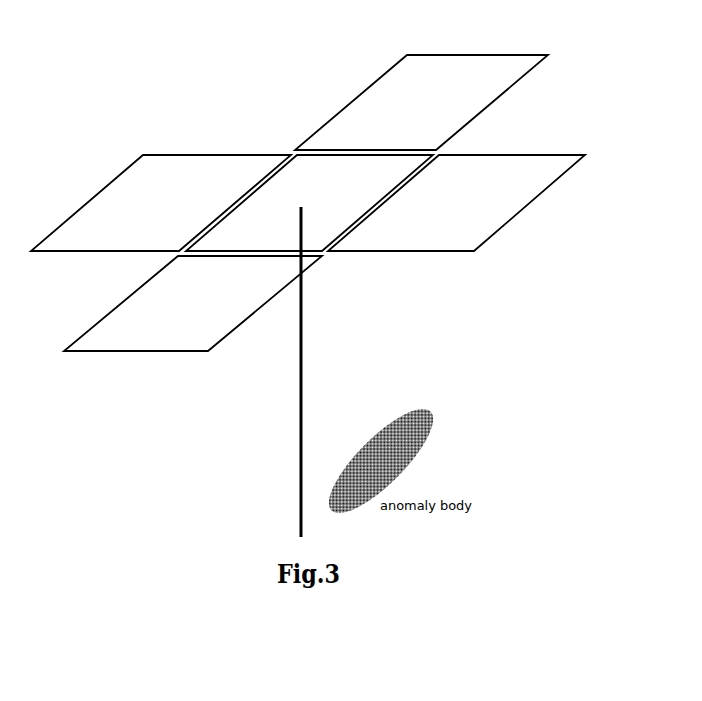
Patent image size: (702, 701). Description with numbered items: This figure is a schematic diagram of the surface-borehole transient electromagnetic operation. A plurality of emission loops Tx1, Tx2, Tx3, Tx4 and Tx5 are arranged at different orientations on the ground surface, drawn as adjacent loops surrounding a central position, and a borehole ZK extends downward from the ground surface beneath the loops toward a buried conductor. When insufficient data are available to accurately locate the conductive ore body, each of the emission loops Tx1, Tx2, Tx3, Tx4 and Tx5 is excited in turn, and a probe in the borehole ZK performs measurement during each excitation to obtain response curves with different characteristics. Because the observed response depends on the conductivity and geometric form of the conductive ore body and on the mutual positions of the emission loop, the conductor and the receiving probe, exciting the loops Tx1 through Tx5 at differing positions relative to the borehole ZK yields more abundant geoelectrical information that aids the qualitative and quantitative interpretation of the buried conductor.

The emission loop Tx1 is at (309, 203).
The emission loop Tx2 is at (421, 102).
The emission loop Tx3 is at (456, 203).
The emission loop Tx4 is at (193, 303).
The emission loop Tx5 is at (161, 203).
The borehole ZK is at (301, 362).